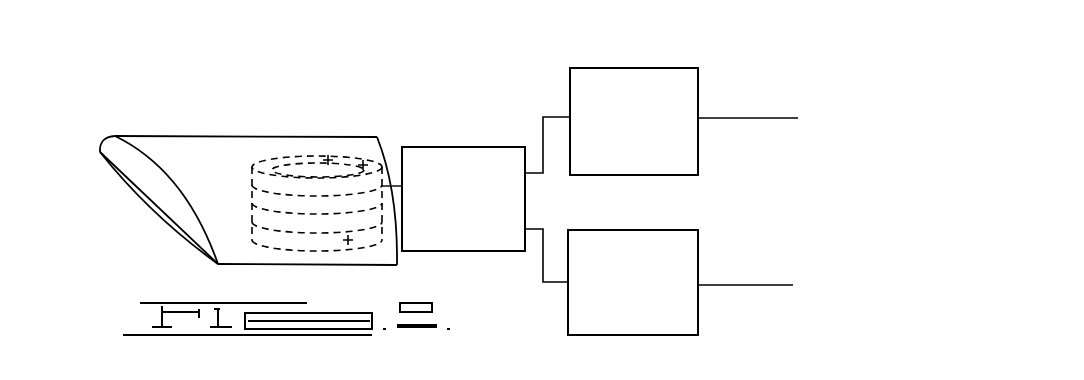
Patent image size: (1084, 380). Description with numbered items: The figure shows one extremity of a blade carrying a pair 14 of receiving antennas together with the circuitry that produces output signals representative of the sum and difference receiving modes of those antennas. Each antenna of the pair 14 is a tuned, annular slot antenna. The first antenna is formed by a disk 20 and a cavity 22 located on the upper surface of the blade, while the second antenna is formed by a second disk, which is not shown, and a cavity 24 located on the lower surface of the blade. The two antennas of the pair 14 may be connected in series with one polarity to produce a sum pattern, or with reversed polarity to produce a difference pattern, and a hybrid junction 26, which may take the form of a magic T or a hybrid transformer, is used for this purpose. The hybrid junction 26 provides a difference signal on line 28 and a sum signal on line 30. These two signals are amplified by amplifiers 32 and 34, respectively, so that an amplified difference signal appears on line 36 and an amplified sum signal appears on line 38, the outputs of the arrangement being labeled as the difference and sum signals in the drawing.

The pair of receiving antennas 14 is at (307, 163).
The disk 20 is at (329, 157).
The cavity 22 is at (364, 160).
The cavity 24 is at (348, 246).
The hybrid junction 26 is at (450, 147).
The line 28 is at (550, 117).
The line 30 is at (557, 282).
The amplifier 32 is at (648, 67).
The amplifier 34 is at (688, 230).
The line 36 is at (723, 115).
The line 38 is at (717, 280).